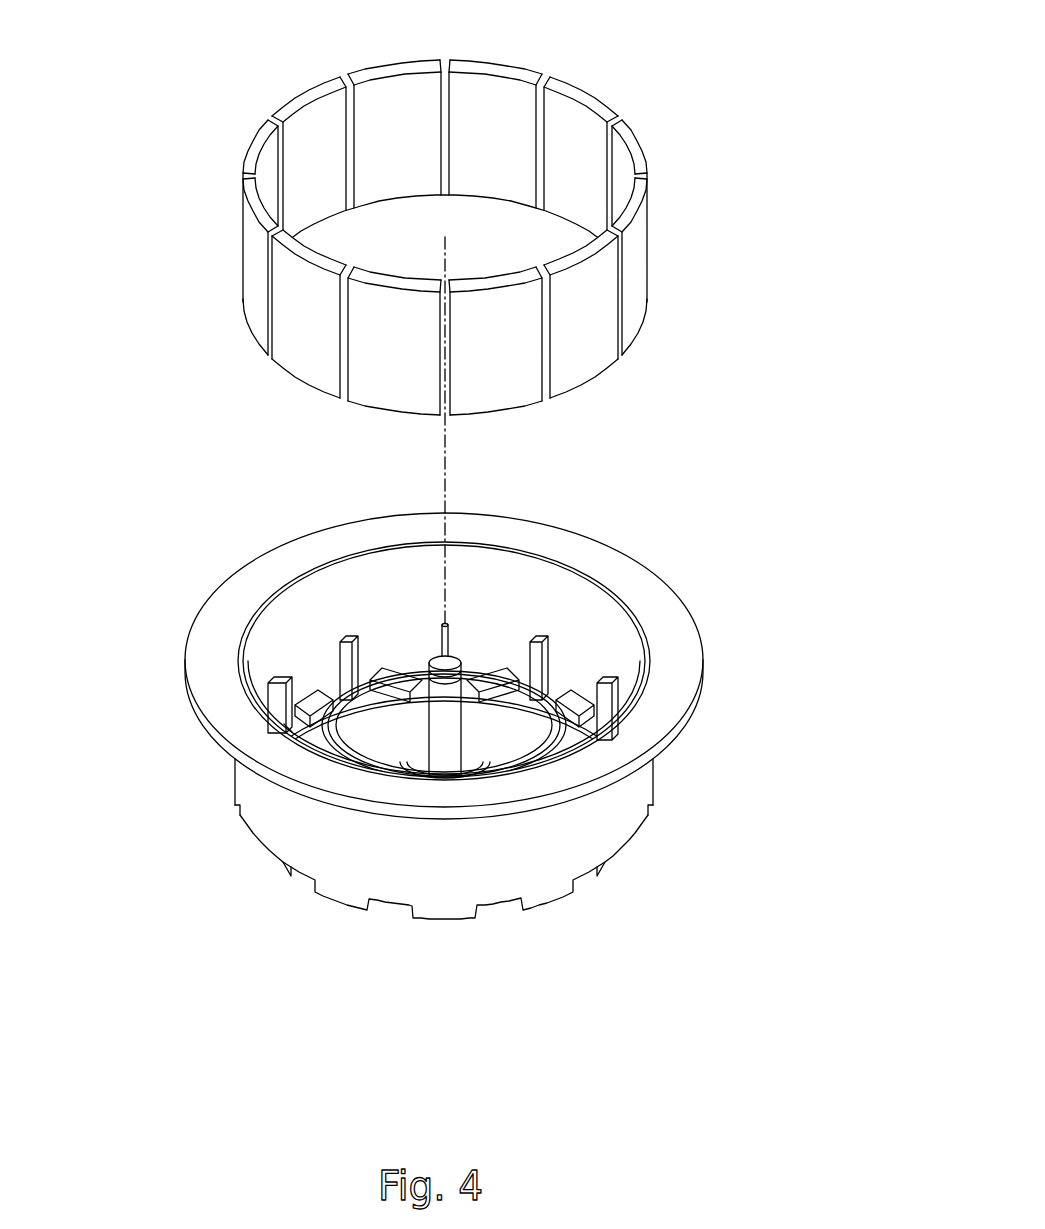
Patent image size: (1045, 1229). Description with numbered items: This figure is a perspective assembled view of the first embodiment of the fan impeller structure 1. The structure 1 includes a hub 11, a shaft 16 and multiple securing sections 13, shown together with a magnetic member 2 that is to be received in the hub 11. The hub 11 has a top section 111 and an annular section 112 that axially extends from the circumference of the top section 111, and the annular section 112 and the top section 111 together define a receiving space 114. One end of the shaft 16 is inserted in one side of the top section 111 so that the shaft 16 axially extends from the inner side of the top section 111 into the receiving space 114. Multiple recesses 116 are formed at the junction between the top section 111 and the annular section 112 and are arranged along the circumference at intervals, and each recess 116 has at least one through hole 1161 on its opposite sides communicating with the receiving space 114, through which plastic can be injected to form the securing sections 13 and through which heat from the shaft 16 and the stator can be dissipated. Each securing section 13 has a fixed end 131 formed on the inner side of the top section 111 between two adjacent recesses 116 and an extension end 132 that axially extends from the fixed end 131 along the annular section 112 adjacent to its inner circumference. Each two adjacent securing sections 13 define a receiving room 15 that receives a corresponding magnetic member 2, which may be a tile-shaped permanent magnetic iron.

The fan impeller structure 1 is at (723, 410).
The magnetic member 2 is at (580, 100).
The hub 11 is at (760, 882).
The top section 111 is at (555, 920).
The annular section 112 is at (588, 832).
The receiving space 114 is at (552, 582).
The recess 116 is at (296, 884).
The through hole 1161 is at (290, 728).
The securing section 13 is at (143, 492).
The fixed end 131 is at (353, 693).
The extension end 132 is at (347, 640).
The receiving room 15 is at (397, 637).
The shaft 16 is at (450, 662).